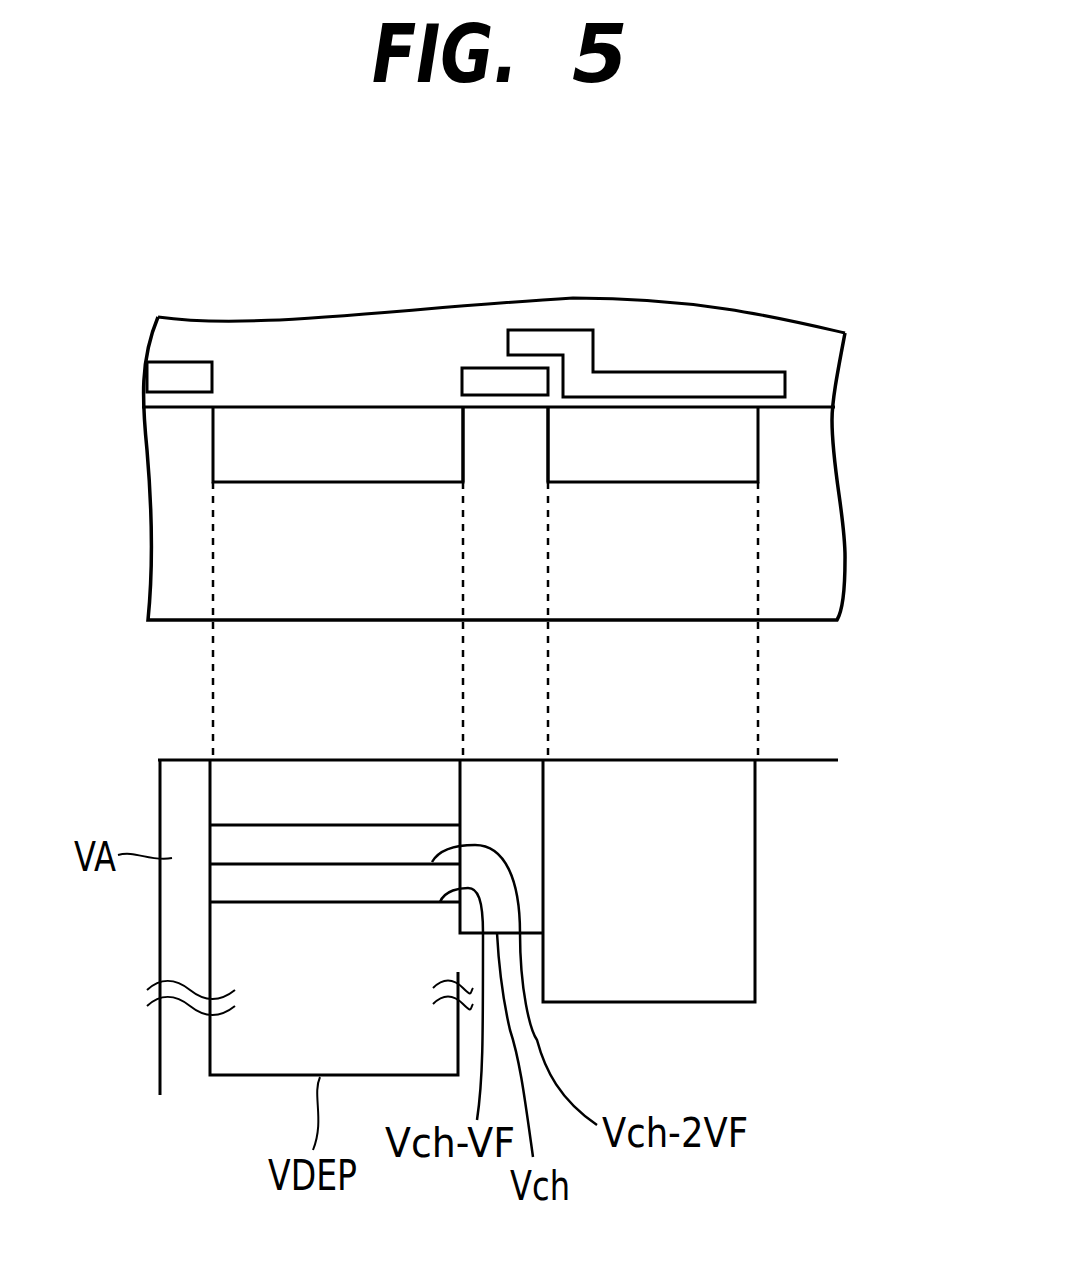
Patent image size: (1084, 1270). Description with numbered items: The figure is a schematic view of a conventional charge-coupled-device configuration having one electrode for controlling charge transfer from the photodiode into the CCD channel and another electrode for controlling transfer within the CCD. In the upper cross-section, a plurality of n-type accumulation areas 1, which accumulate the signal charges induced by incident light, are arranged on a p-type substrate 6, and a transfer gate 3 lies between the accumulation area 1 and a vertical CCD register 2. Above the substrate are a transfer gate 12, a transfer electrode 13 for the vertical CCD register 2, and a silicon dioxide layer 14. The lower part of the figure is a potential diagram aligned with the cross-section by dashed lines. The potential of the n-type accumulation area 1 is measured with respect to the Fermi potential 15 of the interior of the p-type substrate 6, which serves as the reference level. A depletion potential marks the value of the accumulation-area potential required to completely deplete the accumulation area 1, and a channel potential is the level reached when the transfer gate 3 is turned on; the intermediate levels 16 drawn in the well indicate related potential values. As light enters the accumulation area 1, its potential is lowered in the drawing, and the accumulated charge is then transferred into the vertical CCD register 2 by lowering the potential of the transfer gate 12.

The n-type accumulation area 1 is at (343, 460).
The vertical CCD register 2 is at (655, 472).
The transfer gate 3 is at (512, 470).
The p-type substrate 6 is at (827, 585).
The transfer gate 12 is at (473, 377).
The transfer electrode 13 is at (713, 382).
The silicon dioxide layer 14 is at (817, 397).
The Fermi potential 15 is at (805, 760).
The potential levels 16 is at (327, 823).